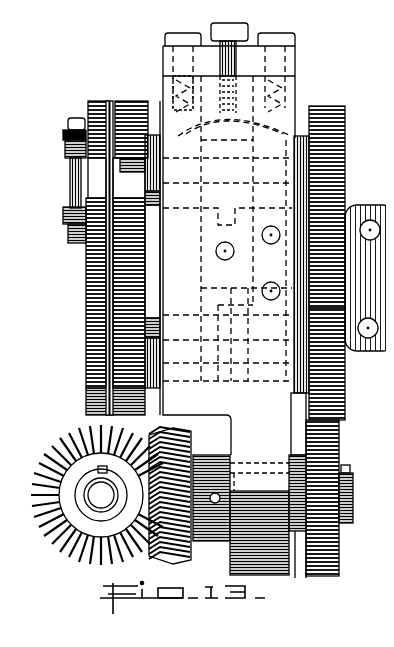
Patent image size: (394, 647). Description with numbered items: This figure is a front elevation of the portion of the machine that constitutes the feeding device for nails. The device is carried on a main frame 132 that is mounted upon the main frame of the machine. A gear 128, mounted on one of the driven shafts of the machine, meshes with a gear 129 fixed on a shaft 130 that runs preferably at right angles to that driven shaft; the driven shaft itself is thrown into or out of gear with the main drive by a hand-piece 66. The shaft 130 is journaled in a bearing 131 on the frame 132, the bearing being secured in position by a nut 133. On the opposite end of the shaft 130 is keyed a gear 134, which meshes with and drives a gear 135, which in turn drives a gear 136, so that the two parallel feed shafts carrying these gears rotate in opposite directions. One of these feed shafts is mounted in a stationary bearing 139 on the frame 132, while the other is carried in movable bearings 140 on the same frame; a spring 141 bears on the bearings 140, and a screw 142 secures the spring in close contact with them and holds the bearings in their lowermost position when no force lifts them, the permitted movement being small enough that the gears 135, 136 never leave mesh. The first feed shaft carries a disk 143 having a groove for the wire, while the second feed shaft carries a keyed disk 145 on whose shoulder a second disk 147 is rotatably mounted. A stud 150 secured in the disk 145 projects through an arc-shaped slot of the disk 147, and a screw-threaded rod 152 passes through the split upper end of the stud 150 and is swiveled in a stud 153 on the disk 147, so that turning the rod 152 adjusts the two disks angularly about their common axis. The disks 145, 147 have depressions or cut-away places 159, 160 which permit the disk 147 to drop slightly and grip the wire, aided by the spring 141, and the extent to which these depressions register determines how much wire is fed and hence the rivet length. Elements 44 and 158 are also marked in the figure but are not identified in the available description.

The screw 142 is at (240, 21).
The spring 141 is at (160, 88).
The disk 145 is at (133, 96).
The gear 158 is at (93, 81).
The second disk 147 is at (80, 100).
The stud 153 is at (57, 135).
The screw-threaded rod 152 is at (62, 180).
The stud 150 is at (55, 215).
The depression 160 is at (104, 178).
The depression 159 is at (132, 178).
The gear 44 is at (78, 282).
The disk 143 is at (105, 327).
The movable bearings 140 is at (278, 124).
The stationary bearing 139 is at (250, 300).
The gear 136 is at (337, 152).
The gear 135 is at (337, 376).
The gear 134 is at (329, 568).
The bearing 131 is at (290, 568).
The shaft 130 is at (345, 478).
The gear 128 is at (42, 520).
The hand-piece 66 is at (97, 487).
The gear 129 is at (174, 543).
The nut 133 is at (212, 447).
The main frame 132 is at (260, 501).